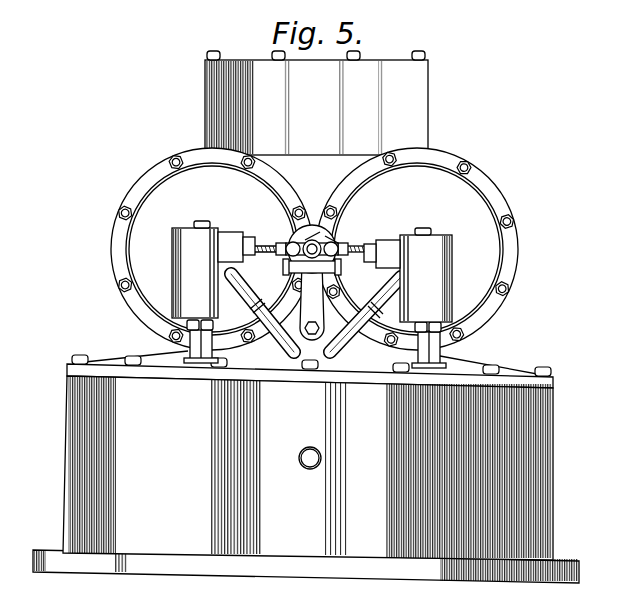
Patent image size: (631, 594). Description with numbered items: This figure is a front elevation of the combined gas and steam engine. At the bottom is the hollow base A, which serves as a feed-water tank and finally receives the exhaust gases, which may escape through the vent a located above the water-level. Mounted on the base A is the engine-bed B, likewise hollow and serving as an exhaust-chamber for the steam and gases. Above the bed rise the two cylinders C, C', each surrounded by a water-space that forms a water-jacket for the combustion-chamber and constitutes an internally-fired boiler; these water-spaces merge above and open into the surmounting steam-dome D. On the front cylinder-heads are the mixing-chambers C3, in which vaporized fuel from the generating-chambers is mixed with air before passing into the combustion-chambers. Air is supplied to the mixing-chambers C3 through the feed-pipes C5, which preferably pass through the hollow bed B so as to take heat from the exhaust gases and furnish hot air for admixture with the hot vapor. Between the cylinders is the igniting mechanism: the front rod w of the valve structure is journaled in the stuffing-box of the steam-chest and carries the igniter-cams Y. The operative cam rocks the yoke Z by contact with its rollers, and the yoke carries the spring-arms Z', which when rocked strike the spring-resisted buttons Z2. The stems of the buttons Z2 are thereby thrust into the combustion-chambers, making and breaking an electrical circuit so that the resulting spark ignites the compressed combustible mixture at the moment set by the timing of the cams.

The base A is at (293, 555).
The engine-bed B is at (103, 363).
The vent a is at (299, 459).
The steam-dome D is at (316, 103).
The cylinder C is at (212, 249).
The cylinder C' is at (417, 249).
The mixing-chamber C3 is at (312, 294).
The feed-pipe C5 is at (364, 345).
The rocking yoke Z is at (325, 272).
The spring-arm Z' is at (310, 270).
The spring-resisted button Z2 is at (384, 230).
The igniter-cam Y is at (318, 236).
The front rod w is at (337, 240).